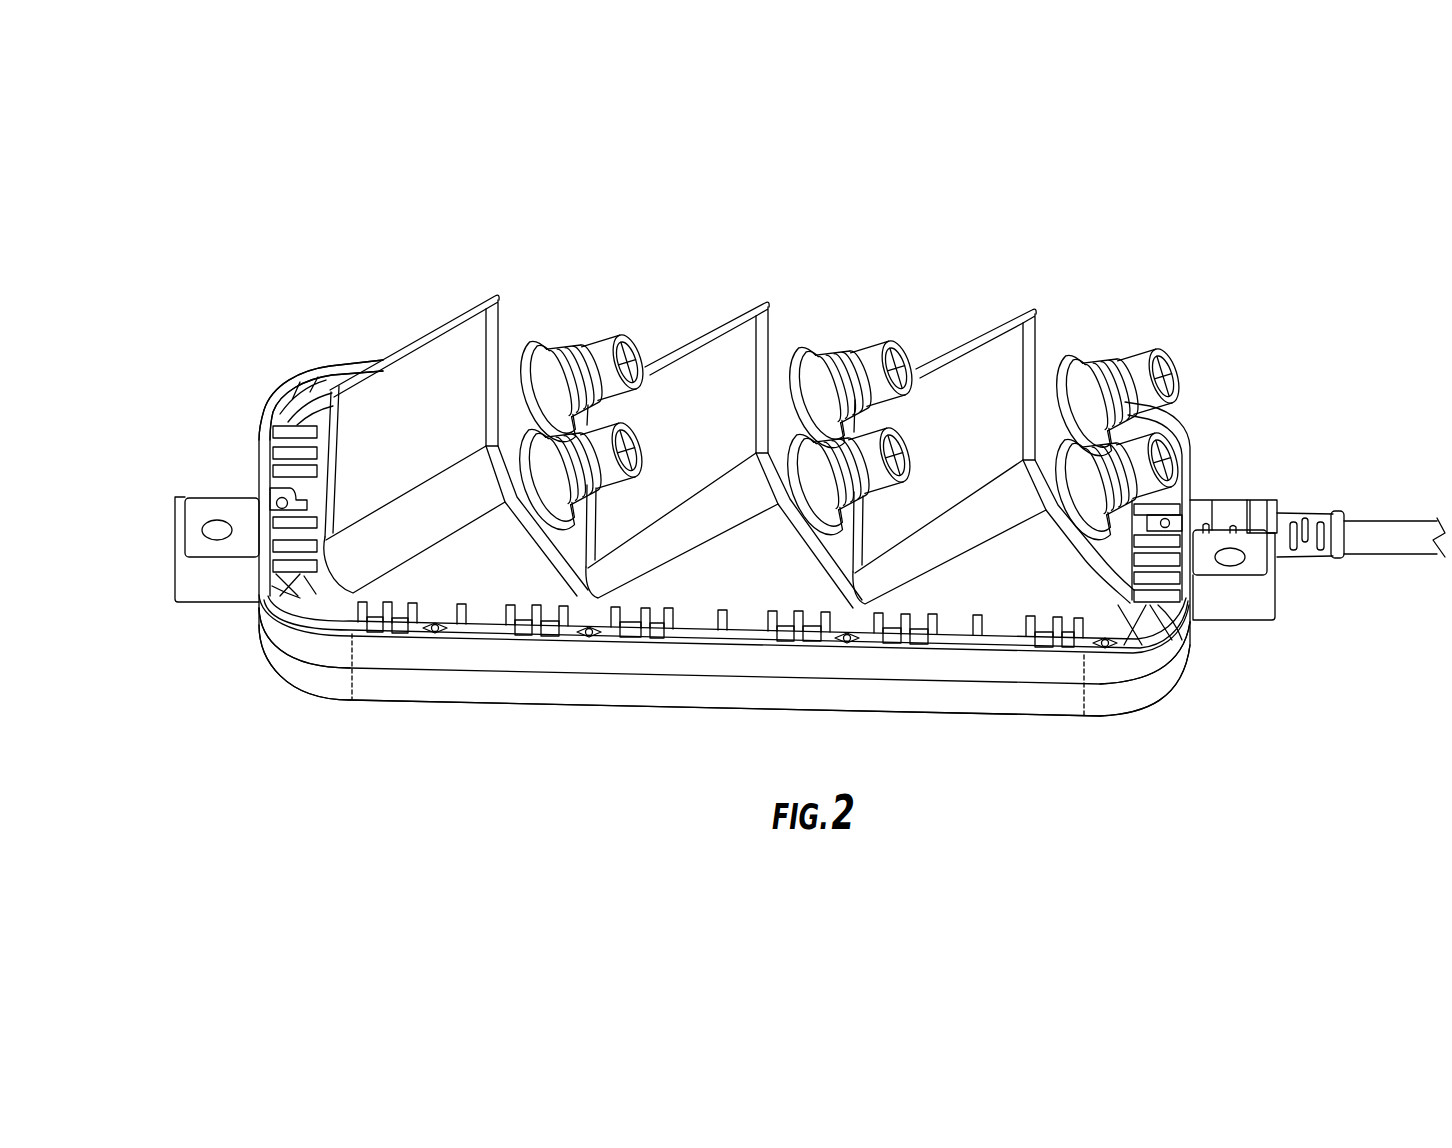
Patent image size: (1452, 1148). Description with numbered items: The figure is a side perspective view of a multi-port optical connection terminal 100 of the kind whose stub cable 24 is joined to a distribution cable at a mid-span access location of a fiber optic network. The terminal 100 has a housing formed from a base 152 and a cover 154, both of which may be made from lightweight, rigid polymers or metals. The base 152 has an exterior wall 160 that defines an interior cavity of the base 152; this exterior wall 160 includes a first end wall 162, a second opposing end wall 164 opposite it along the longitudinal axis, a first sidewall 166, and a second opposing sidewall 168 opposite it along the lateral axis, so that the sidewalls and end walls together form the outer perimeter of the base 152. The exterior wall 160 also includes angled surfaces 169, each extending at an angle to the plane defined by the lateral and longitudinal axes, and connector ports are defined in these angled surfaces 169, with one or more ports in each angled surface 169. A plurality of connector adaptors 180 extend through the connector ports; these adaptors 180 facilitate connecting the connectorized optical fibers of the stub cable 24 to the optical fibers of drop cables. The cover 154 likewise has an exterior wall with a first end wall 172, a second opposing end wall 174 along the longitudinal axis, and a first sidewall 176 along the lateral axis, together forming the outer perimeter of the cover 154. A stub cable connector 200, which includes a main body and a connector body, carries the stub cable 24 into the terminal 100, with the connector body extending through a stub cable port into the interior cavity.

The multi-port optical connection terminal 100 is at (278, 240).
The stub cable 24 is at (1422, 557).
The base 152 is at (293, 597).
The cover 154 is at (408, 702).
The exterior wall 160 is at (415, 410).
The first end wall 162 is at (1191, 607).
The second opposing end wall 164 is at (259, 449).
The first sidewall 166 is at (628, 660).
The second opposing sidewall 168 is at (361, 364).
The angled surface 169 is at (510, 357).
The first end wall 172 is at (1193, 648).
The second opposing end wall 174 is at (257, 647).
The first sidewall 176 is at (530, 702).
The connector adaptor 180 is at (612, 334).
The stub cable connector 200 is at (1232, 499).